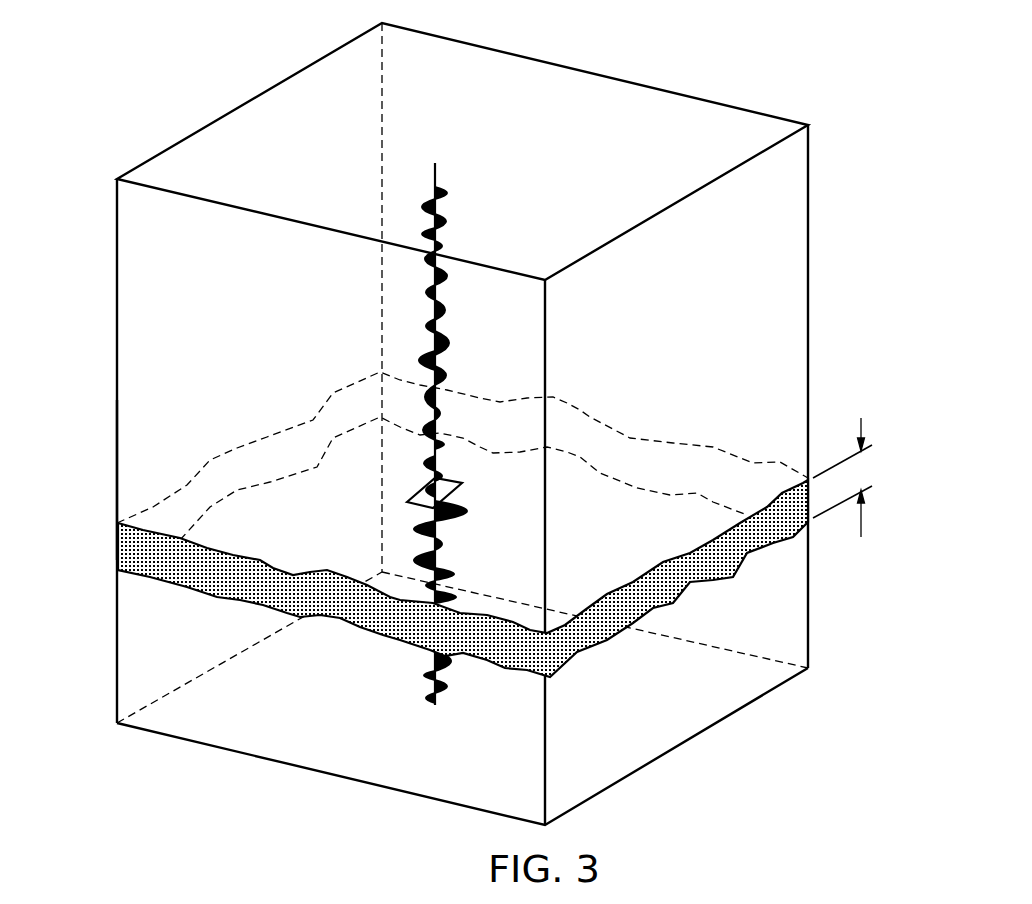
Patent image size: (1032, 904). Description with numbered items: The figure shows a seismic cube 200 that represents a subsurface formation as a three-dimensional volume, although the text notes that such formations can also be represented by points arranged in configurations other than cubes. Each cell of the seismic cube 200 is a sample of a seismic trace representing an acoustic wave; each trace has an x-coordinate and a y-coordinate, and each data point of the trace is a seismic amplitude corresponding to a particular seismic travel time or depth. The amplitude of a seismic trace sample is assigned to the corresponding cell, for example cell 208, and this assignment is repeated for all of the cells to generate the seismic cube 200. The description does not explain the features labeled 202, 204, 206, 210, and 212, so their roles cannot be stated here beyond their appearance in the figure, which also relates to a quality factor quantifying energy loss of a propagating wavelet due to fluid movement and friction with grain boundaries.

The seismic cube 200 is at (600, 66).
The subsurface formation 202 is at (100, 549).
The geologic layer 204 is at (330, 535).
The thin bed layer 206 is at (603, 641).
The cell 208 is at (455, 480).
The well log trace 210 is at (437, 174).
The layer thickness 212 is at (862, 520).